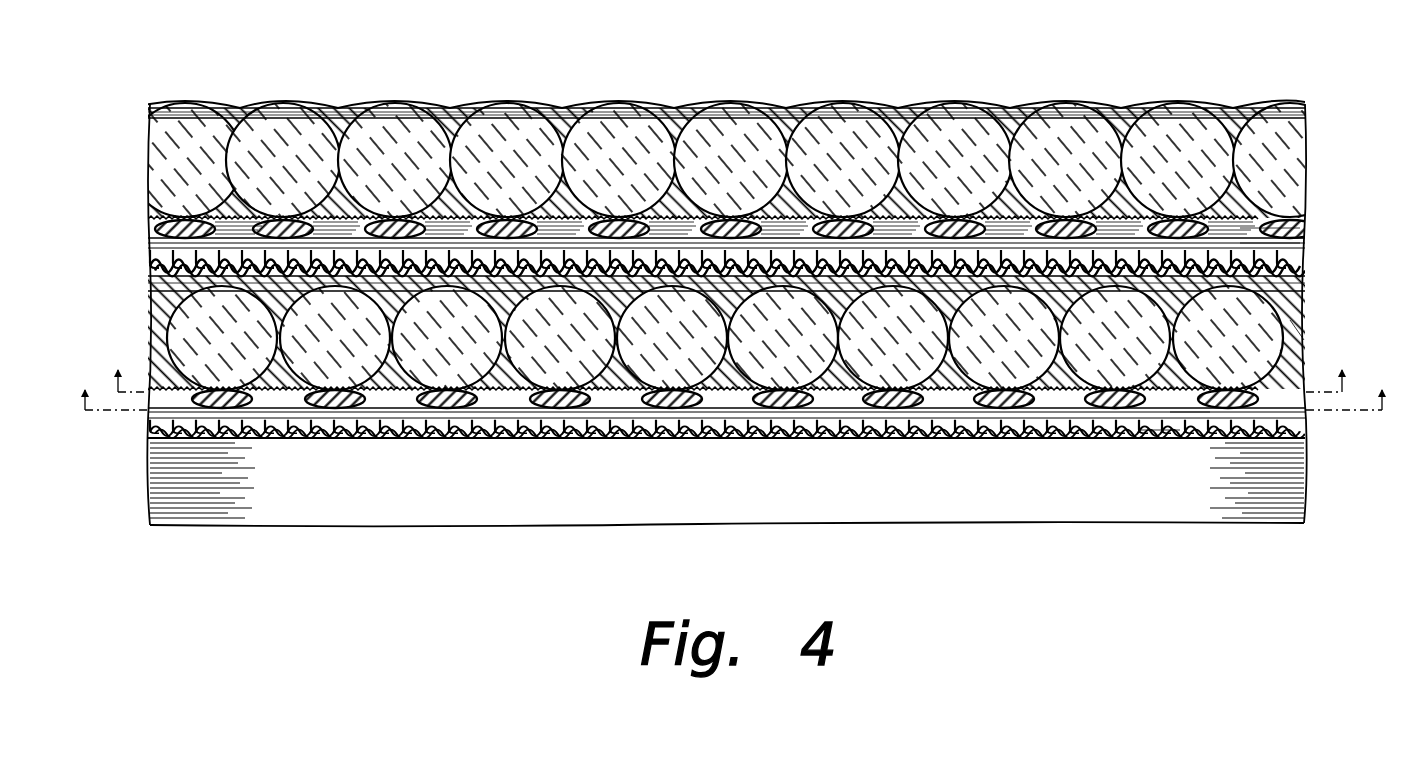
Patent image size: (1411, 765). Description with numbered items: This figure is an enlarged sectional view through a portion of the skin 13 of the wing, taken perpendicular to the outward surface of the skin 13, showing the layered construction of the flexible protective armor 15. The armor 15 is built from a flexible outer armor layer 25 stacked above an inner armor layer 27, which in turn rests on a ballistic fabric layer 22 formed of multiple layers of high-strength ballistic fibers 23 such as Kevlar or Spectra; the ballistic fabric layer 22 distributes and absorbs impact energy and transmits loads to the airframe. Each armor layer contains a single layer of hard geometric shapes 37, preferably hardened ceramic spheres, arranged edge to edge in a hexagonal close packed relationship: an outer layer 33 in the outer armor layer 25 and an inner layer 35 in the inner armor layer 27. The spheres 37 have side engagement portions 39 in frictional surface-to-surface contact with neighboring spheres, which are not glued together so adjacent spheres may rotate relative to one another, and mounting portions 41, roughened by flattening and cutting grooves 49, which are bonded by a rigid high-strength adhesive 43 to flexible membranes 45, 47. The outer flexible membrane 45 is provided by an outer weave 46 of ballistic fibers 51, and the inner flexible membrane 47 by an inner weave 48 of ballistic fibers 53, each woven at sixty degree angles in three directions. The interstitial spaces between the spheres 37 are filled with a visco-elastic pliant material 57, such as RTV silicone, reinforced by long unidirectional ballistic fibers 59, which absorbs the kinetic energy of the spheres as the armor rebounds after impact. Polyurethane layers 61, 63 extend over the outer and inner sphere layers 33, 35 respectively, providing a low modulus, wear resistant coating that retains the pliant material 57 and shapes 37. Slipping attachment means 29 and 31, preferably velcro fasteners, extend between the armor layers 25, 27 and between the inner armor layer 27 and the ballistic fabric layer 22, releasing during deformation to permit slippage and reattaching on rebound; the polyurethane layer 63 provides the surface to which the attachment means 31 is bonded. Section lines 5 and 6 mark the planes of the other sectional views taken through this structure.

The skin 13 is at (280, 103).
The flexible protective armor 15 is at (215, 104).
The ballistic fabric layer 22 is at (1308, 484).
The ballistic fibers 23 is at (1275, 508).
The flexible outer armor layer 25 is at (328, 104).
The inner armor layer 27 is at (465, 268).
The slipping attachment means 29 is at (528, 237).
The slipping attachment means 31 is at (262, 440).
The outer layer of hard geometric shapes 33 is at (146, 165).
The inner layer of hard geometric shapes 35 is at (146, 306).
The hard geometric shapes 37 is at (612, 127).
The side engagement portions 39 is at (905, 150).
The mounting portions 41 is at (742, 222).
The adhesive 43 is at (1185, 232).
The flexible membrane 45 is at (1282, 241).
The outer weave 46 is at (1290, 220).
The flexible membrane 47 is at (1302, 348).
The inner weave 48 is at (1162, 440).
The grooves 49 is at (716, 222).
The ballistic fibers 51 is at (1150, 220).
The ballistic fibers 53 is at (1190, 412).
The pliant material 57 is at (1045, 108).
The ballistic fibers 59 is at (1005, 125).
The polyurethane layer 61 is at (862, 108).
The polyurethane layer 63 is at (1300, 298).
The section line 5- 5 is at (732, 391).
The section line 6- 6 is at (729, 365).